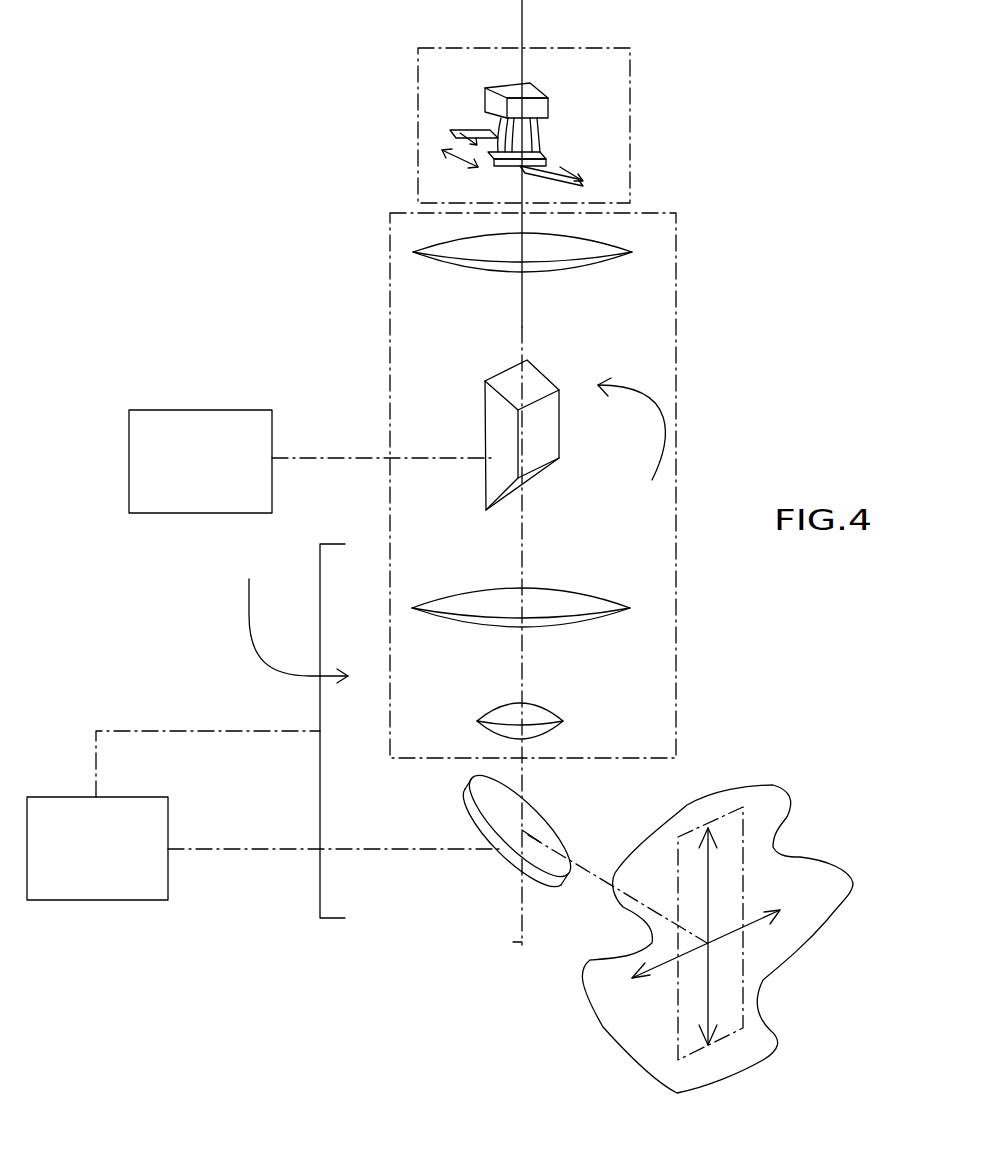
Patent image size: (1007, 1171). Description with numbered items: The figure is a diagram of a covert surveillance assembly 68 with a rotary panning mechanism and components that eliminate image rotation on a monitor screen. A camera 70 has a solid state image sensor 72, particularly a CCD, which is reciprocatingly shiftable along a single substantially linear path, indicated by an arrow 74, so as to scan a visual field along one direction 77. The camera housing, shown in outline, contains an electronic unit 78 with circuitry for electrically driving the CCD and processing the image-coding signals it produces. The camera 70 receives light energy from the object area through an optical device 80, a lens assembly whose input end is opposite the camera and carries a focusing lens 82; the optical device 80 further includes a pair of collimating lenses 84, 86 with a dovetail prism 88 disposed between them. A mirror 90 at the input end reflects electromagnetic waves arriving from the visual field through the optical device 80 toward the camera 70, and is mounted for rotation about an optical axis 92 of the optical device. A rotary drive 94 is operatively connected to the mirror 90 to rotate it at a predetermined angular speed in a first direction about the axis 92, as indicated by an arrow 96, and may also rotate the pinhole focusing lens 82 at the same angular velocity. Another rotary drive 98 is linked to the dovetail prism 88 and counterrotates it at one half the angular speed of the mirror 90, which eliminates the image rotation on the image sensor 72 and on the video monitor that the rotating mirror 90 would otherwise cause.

The covert surveillance assembly 68 is at (854, 238).
The camera 70 is at (632, 100).
The solid state image sensor 72 is at (543, 157).
The arrow 74 is at (461, 162).
The direction 77 is at (777, 857).
The electronic unit 78 is at (773, 818).
The optical device 80 is at (678, 338).
The focusing lens 82 is at (550, 713).
The collimating lens 84 is at (488, 598).
The collimating lens 86 is at (578, 266).
The dovetail prism 88 is at (547, 457).
The mirror 90 is at (510, 865).
The optical axis 92 is at (513, 942).
The rotary drive 94 is at (137, 899).
The arrow 96 is at (254, 649).
The rotary drive 98 is at (247, 410).